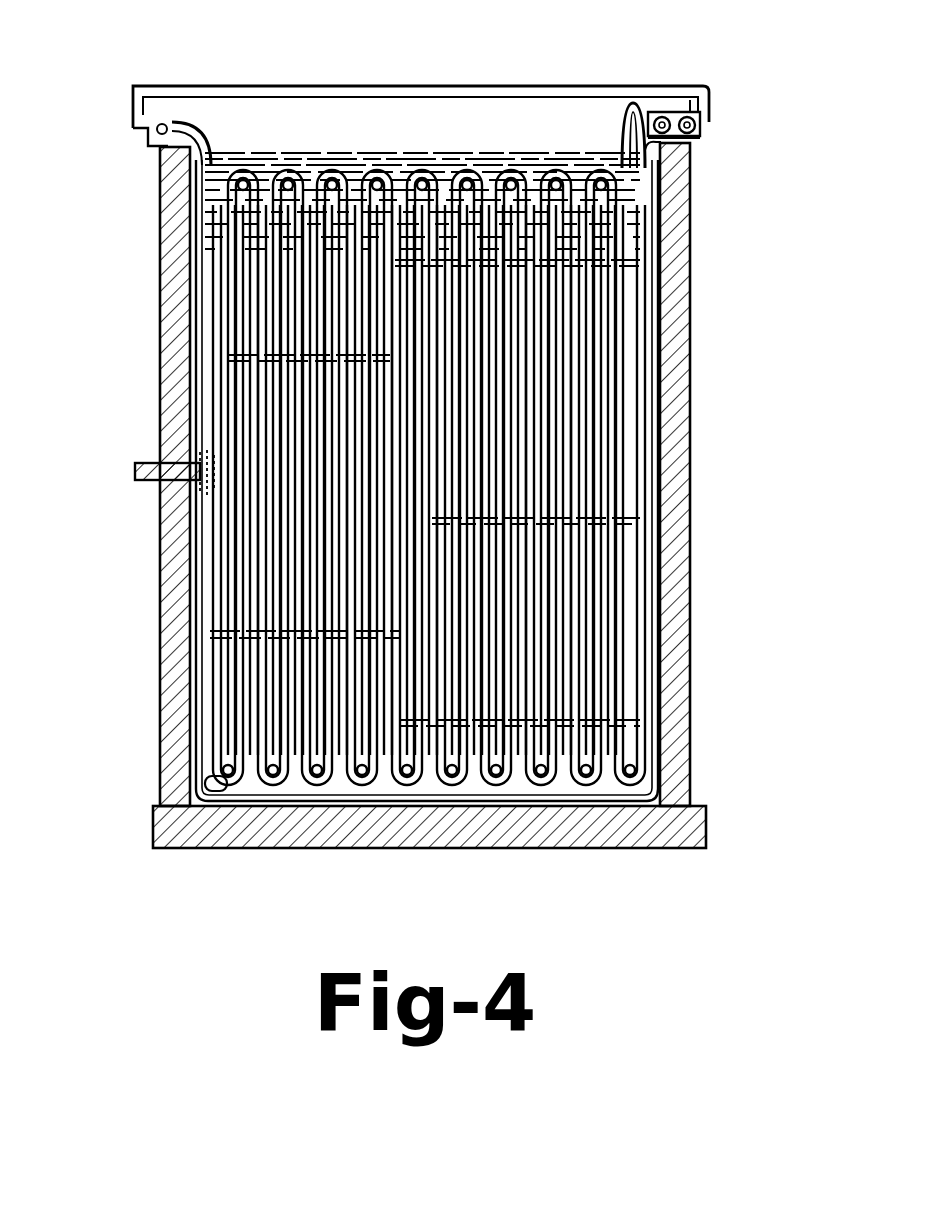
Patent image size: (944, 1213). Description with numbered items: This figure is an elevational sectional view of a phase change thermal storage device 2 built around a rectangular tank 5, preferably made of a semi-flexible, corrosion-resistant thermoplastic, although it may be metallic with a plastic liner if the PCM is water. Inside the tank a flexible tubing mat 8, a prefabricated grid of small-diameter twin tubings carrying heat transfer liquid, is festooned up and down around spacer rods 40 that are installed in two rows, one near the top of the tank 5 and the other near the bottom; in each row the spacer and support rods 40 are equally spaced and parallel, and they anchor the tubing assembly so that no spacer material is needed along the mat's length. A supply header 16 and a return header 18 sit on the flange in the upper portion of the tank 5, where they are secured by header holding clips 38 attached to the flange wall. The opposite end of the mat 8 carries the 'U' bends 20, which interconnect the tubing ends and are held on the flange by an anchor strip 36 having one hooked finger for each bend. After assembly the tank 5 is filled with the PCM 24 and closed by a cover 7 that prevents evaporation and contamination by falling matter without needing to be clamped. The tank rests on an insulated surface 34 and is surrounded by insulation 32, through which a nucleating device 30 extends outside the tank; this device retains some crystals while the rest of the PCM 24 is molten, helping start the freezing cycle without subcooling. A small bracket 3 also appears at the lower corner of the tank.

The thermal storage device 2 is at (700, 342).
The bottom retaining bracket 3 is at (222, 793).
The rectangular tank 5 is at (670, 405).
The cover 7 is at (587, 74).
The flexible tubing mat 8 is at (258, 290).
The supply header 16 is at (692, 158).
The return header 18 is at (690, 136).
The 'U' bends 20 is at (164, 121).
The PCM 24 is at (442, 162).
The nucleating device 30 is at (152, 462).
The insulation 32 is at (675, 506).
The insulated surface 34 is at (627, 836).
The anchor strip 36 is at (161, 112).
The header holding clips 38 is at (684, 110).
The spacer rods 40 is at (338, 182).